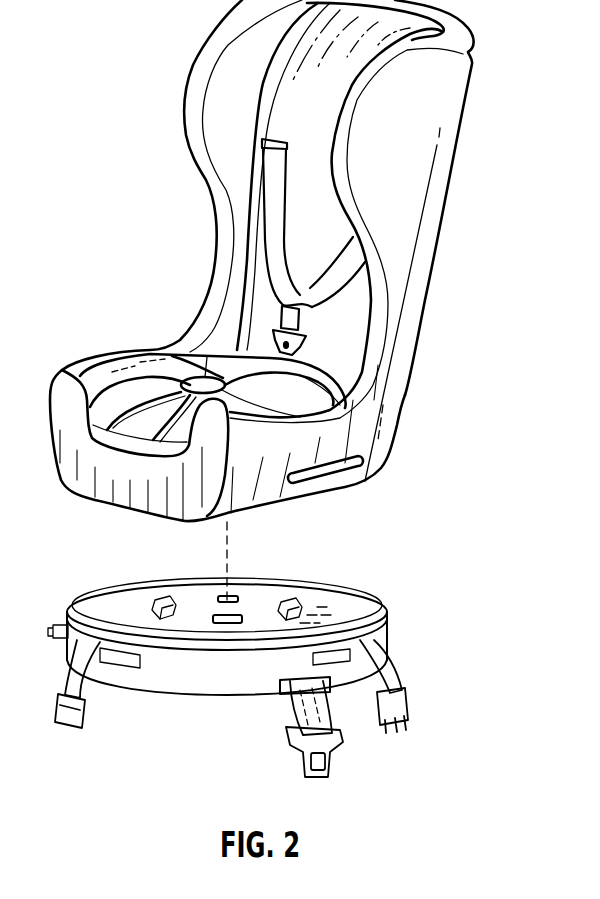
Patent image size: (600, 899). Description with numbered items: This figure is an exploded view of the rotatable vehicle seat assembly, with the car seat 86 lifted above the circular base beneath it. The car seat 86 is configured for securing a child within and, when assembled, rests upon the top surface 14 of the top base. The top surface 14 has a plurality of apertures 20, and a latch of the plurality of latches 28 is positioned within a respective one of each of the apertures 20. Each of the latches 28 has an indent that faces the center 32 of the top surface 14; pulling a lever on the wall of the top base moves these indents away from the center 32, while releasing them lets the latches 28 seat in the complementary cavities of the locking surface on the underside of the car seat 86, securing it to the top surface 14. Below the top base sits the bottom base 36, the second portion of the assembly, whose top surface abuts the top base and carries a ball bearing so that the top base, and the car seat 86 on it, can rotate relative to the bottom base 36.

The top surface 14 is at (228, 647).
The apertures 20 is at (167, 610).
The latches 28 is at (165, 600).
The center 32 is at (240, 605).
The bottom base 36 is at (180, 678).
The car seat 86 is at (377, 408).